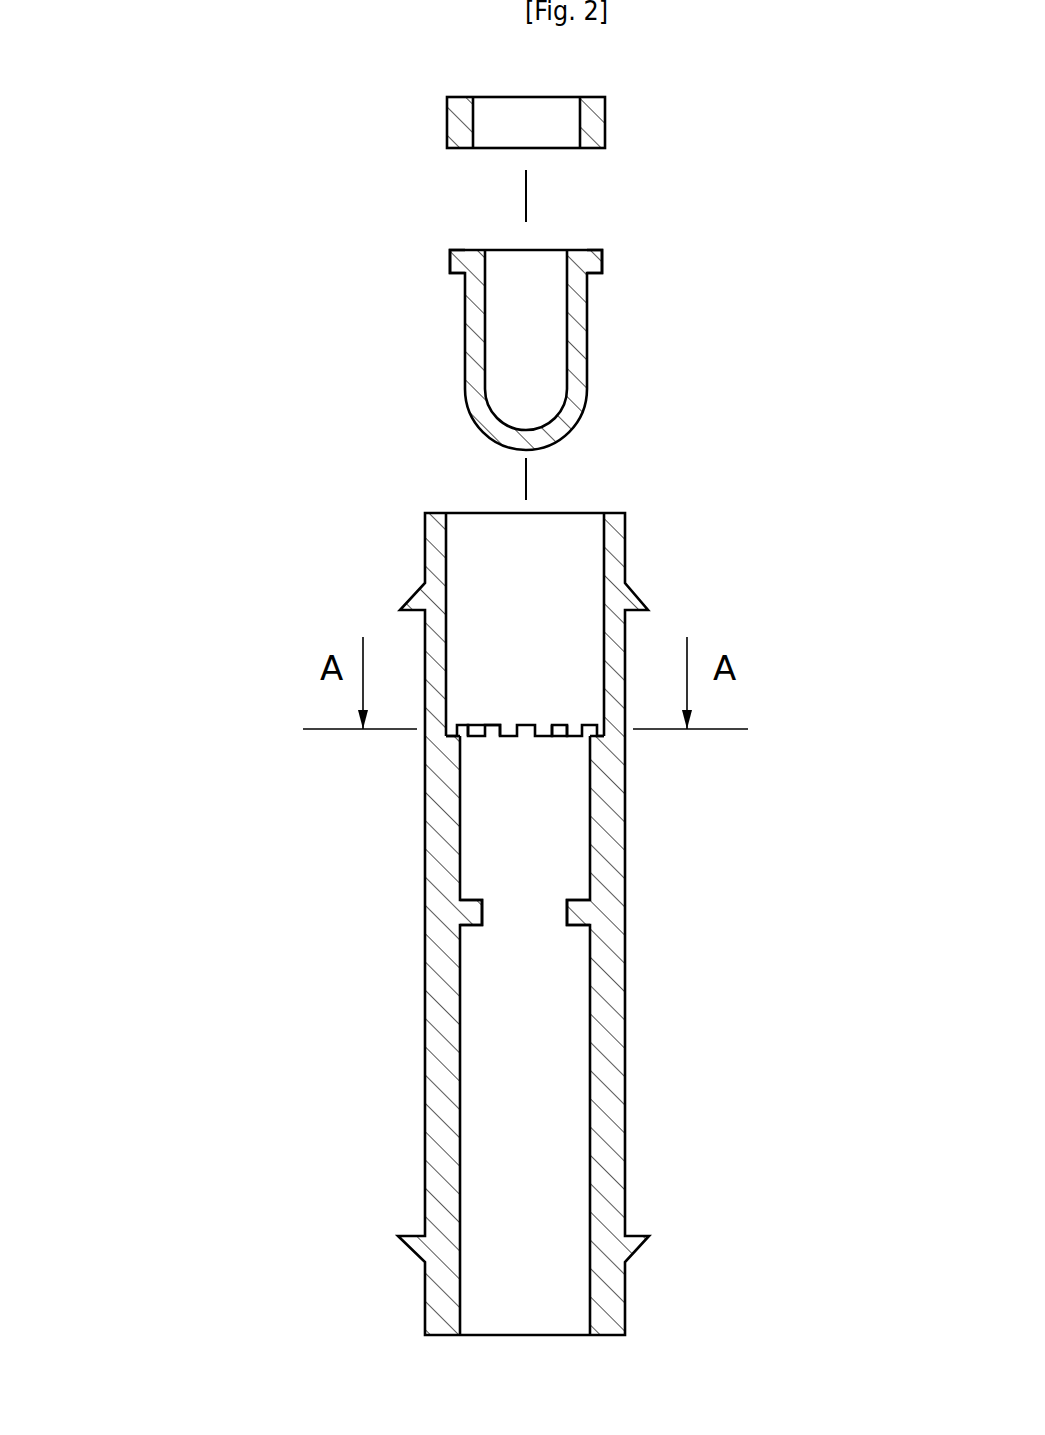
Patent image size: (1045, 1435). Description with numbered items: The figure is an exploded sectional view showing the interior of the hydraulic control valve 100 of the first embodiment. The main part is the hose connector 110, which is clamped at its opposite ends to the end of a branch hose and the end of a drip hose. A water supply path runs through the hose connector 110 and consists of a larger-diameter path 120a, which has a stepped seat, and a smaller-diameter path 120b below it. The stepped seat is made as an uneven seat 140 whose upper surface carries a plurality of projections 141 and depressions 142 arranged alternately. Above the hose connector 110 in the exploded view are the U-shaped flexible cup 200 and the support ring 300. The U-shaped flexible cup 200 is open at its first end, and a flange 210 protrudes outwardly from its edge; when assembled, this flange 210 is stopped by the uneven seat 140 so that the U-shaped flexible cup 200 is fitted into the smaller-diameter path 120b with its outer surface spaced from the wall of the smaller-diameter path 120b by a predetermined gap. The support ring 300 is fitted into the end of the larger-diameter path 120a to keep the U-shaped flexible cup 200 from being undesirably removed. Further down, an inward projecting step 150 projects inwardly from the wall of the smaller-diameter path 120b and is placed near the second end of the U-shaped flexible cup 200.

The hydraulic control valve 100 is at (266, 474).
The hose connector 110 is at (443, 962).
The larger-diameter path 120a is at (535, 556).
The smaller-diameter path 120b is at (498, 1100).
The uneven seat 140 is at (527, 742).
The projection 141 is at (493, 727).
The depression 142 is at (577, 727).
The inward projecting step 150 is at (578, 908).
The U-shaped flexible cup 200 is at (585, 358).
The flange 210 is at (598, 262).
The support ring 300 is at (602, 130).